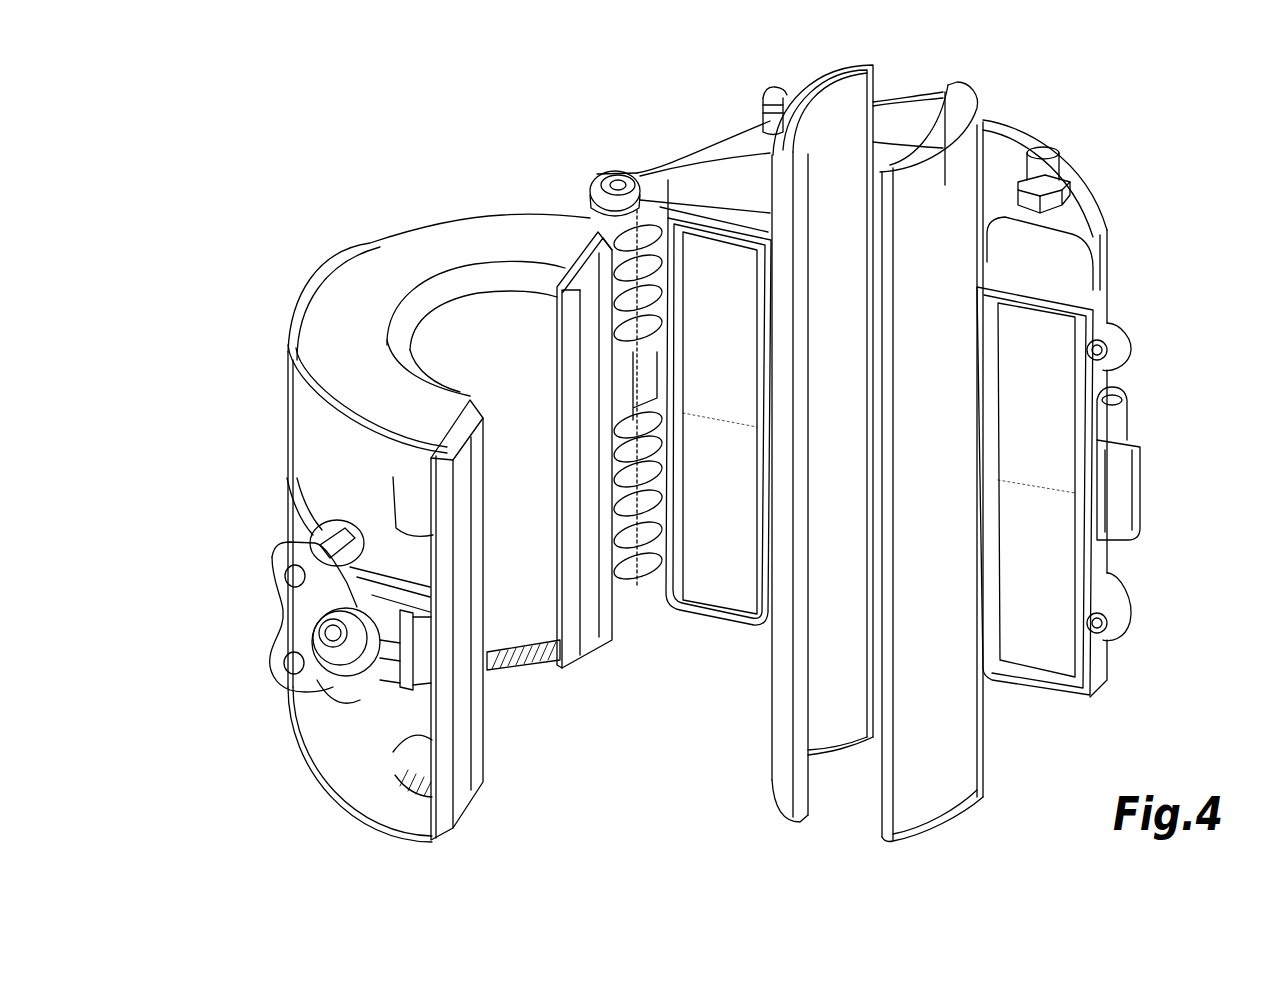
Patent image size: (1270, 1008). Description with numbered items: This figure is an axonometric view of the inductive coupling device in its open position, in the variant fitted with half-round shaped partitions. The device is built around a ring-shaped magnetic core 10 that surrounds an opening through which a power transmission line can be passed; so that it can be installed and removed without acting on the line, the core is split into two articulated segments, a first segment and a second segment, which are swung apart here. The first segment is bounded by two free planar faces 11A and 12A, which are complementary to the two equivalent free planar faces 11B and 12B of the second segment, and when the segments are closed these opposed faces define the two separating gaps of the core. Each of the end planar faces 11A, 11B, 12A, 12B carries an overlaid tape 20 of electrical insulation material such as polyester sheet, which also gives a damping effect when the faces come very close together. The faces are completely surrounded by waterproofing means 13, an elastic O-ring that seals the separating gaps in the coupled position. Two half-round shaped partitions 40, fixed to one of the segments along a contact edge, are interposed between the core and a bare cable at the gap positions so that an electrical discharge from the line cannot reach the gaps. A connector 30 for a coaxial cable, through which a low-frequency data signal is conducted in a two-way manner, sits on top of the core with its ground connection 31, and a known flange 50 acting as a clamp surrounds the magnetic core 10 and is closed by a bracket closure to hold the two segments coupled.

The ring-shaped magnetic core 10 is at (543, 95).
The free planar face 11A is at (705, 573).
The free planar face 11B is at (587, 593).
The free planar face 12A is at (1042, 637).
The free planar face 12B is at (467, 758).
The waterproofing means 13 is at (487, 727).
The overlaid tape 20 is at (587, 508).
The connector 30 is at (760, 100).
The ground connection 31 is at (1060, 170).
The half-round shaped partition 40 is at (778, 795).
The flange 50 is at (290, 527).